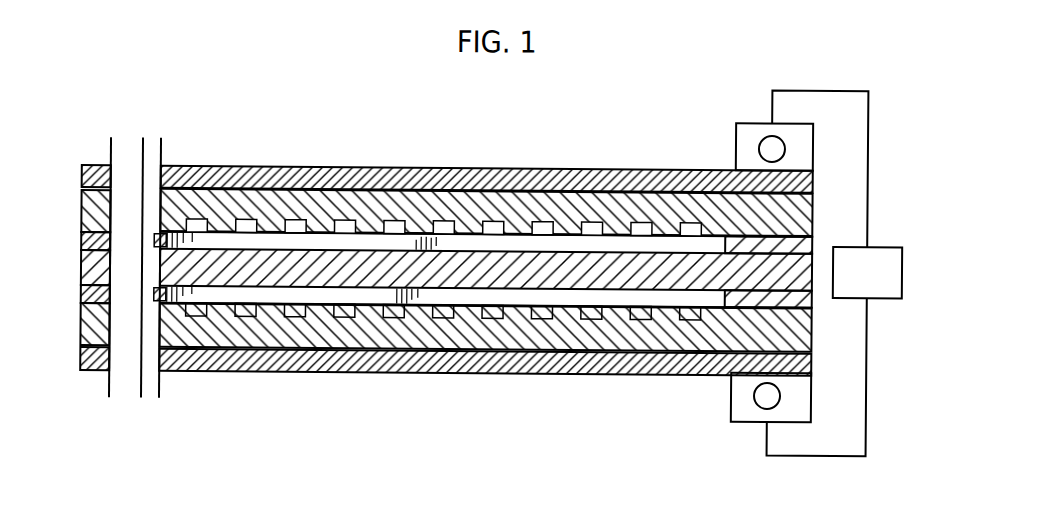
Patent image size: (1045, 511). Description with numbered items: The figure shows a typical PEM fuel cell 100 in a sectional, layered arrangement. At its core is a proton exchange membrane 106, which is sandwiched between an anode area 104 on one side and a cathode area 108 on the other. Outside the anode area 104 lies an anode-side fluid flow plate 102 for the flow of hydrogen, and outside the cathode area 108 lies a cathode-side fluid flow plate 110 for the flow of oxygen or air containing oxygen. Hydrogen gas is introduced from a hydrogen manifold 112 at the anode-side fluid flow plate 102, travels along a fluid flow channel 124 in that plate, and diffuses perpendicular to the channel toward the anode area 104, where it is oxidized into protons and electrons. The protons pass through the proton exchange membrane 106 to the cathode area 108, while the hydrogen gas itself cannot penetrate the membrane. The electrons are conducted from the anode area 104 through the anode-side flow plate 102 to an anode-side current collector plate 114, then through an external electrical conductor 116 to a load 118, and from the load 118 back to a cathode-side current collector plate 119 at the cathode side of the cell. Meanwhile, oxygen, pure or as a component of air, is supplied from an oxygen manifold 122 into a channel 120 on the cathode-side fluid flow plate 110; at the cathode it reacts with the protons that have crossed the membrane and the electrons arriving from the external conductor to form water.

The PEM fuel cell 100 is at (591, 106).
The anode-side fluid flow plate 102 is at (78, 333).
The anode area 104 is at (493, 300).
The proton exchange membrane 106 is at (78, 271).
The cathode area 108 is at (490, 240).
The cathode-side fluid flow plate 110 is at (78, 211).
The hydrogen manifold 112 is at (149, 398).
The anode-side current collector plate 114 is at (681, 376).
The external electrical conductor 116 is at (796, 86).
The load 118 is at (852, 242).
The cathode-side current collector plate 119 is at (627, 166).
The channel 120 is at (294, 229).
The oxygen manifold 122 is at (128, 399).
The fluid flow channel 124 is at (396, 312).